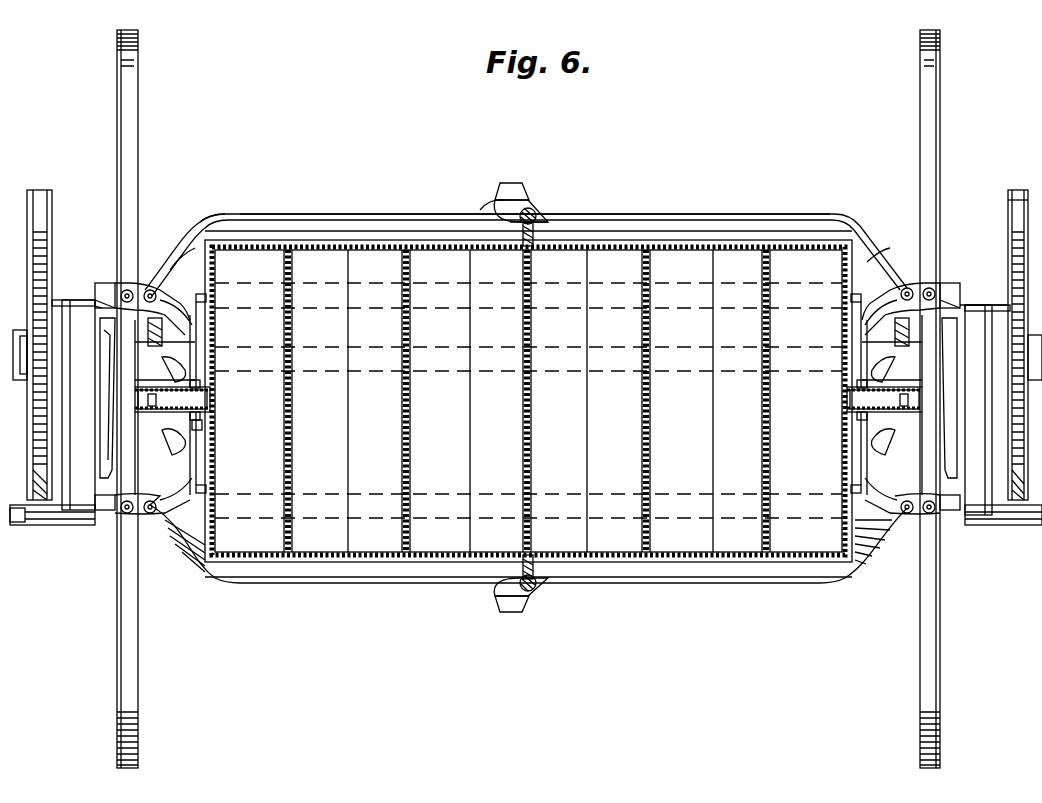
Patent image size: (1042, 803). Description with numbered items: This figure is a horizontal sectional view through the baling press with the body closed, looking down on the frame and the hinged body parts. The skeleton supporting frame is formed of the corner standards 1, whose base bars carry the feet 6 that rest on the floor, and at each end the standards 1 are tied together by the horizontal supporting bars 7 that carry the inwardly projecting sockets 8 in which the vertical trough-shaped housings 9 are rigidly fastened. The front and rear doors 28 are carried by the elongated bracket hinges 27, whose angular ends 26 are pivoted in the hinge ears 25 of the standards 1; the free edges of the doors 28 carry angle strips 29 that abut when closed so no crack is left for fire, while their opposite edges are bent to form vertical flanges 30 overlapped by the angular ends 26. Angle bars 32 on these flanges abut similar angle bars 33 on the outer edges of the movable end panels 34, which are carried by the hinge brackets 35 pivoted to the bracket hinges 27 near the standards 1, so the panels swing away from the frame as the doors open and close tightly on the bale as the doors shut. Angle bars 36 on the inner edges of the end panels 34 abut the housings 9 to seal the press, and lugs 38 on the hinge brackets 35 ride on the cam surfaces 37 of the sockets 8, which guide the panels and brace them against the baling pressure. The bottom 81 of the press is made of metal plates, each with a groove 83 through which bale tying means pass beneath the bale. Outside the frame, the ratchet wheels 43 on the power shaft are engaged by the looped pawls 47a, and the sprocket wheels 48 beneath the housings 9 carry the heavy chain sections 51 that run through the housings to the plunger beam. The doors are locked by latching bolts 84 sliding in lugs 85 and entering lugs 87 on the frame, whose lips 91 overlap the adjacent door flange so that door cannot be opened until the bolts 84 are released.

The corner standards 1 is at (110, 290).
The feet 6 is at (138, 163).
The supporting bars 7 is at (100, 400).
The sockets 8 is at (165, 430).
The trough-shaped housings 9 is at (528, 399).
The hinge ears 25 is at (127, 290).
The angular ends 26 is at (190, 262).
The bracket hinges 27 is at (380, 222).
The doors 28 is at (318, 232).
The angle strips 29 is at (490, 216).
The vertical flanges 30 is at (213, 272).
The angle bars 32 is at (846, 514).
The angle bars 33 is at (208, 302).
The end panels 34 is at (846, 330).
The hinge brackets 35 is at (845, 492).
The angle bars 36 is at (208, 384).
The cam surfaces 37 is at (175, 350).
The lugs 38 is at (205, 428).
The ratchet wheels 43 is at (1005, 298).
The pawls 47a is at (1008, 205).
The sprocket wheels 48 is at (150, 340).
The chain sections 51 is at (108, 430).
The bottom 81 is at (528, 401).
The groove 83 is at (305, 430).
The latching bolts 84 is at (495, 205).
The lugs 85 is at (497, 193).
The lugs 87 is at (520, 200).
The lips 91 is at (528, 215).